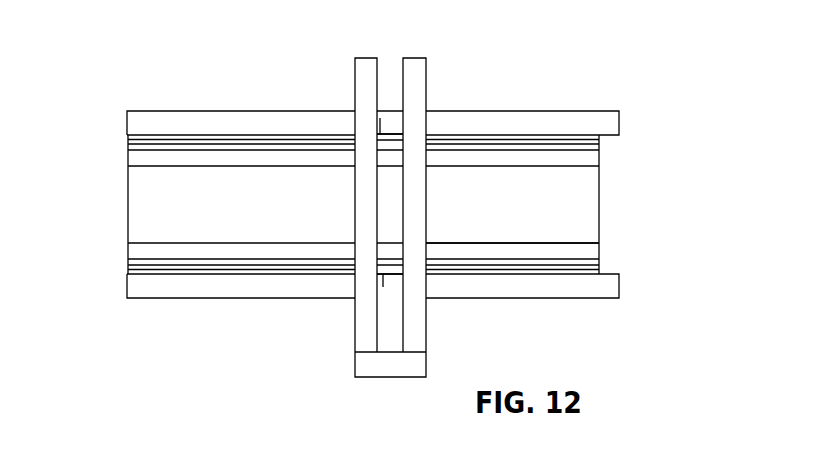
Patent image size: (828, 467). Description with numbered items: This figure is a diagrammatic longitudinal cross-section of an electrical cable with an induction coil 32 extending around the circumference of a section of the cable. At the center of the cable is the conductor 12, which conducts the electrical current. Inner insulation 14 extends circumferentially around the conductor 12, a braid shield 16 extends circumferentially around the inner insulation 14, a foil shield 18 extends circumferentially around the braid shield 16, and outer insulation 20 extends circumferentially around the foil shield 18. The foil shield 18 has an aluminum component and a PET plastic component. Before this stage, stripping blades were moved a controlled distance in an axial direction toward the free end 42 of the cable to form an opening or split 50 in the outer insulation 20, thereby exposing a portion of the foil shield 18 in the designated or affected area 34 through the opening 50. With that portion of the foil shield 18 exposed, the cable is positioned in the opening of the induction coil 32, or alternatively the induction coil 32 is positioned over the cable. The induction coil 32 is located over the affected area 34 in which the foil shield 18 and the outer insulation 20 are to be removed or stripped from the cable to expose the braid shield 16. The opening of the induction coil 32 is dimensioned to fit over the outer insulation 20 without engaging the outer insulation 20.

The conductor 12 is at (600, 207).
The inner insulation 14 is at (600, 153).
The braid shield 16 is at (600, 144).
The foil shield 18 is at (600, 138).
The outer insulation 20 is at (192, 117).
The induction coil 32 is at (362, 57).
The affected area 34 is at (388, 138).
The free end 42 is at (600, 236).
The opening or split 50 is at (380, 120).